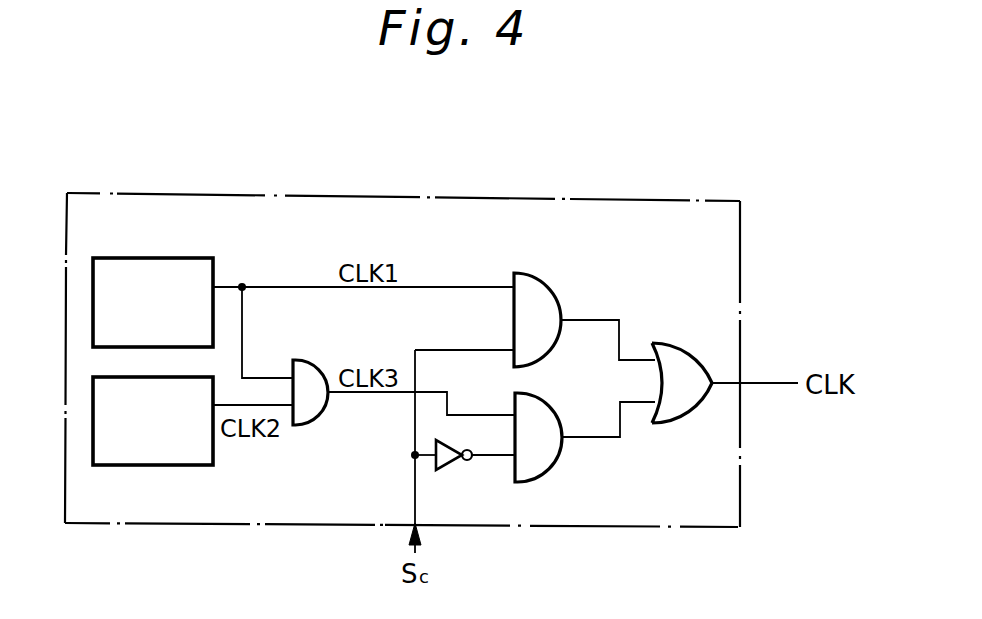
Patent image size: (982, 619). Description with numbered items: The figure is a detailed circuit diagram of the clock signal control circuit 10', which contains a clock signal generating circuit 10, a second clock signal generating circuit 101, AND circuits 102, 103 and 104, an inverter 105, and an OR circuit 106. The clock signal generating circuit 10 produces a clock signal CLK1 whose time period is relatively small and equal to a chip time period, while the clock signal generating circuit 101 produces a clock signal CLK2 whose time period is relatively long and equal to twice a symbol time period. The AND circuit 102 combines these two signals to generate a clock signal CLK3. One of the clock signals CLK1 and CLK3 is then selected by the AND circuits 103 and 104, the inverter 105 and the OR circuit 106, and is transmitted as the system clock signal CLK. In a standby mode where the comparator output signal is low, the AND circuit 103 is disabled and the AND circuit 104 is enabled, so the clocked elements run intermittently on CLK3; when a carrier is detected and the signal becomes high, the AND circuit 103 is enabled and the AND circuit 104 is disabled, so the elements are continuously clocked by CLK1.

The clock signal control circuit 10' is at (402, 322).
The clock signal generating circuit 10 is at (153, 279).
The clock signal generating circuit 101 is at (160, 465).
The AND circuit 102 is at (305, 360).
The AND circuit 103 is at (533, 275).
The AND circuit 104 is at (535, 393).
The inverter 105 is at (450, 462).
The OR circuit 106 is at (680, 340).